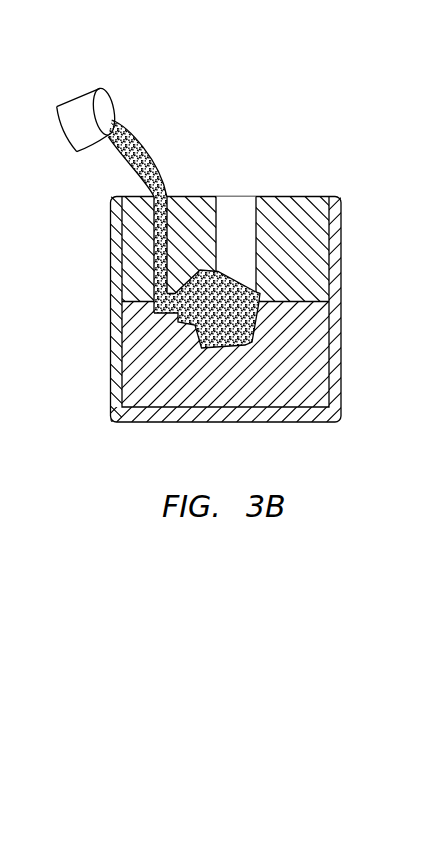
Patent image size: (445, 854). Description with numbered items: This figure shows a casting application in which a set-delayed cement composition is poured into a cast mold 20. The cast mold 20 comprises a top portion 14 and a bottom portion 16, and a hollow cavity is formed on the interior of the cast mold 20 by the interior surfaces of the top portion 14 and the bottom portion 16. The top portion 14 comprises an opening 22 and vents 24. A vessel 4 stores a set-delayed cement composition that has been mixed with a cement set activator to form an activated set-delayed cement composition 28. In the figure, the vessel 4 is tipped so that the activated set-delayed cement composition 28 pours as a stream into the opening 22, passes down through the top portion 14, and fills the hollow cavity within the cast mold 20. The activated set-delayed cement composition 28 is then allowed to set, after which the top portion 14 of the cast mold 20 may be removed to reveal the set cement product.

The vessel 4 is at (72, 105).
The top portion 14 is at (322, 257).
The bottom portion 16 is at (310, 337).
The cast mold 20 is at (117, 430).
The opening 22 is at (154, 196).
The vents 24 is at (256, 196).
The activated set-delayed cement composition 28 is at (154, 136).